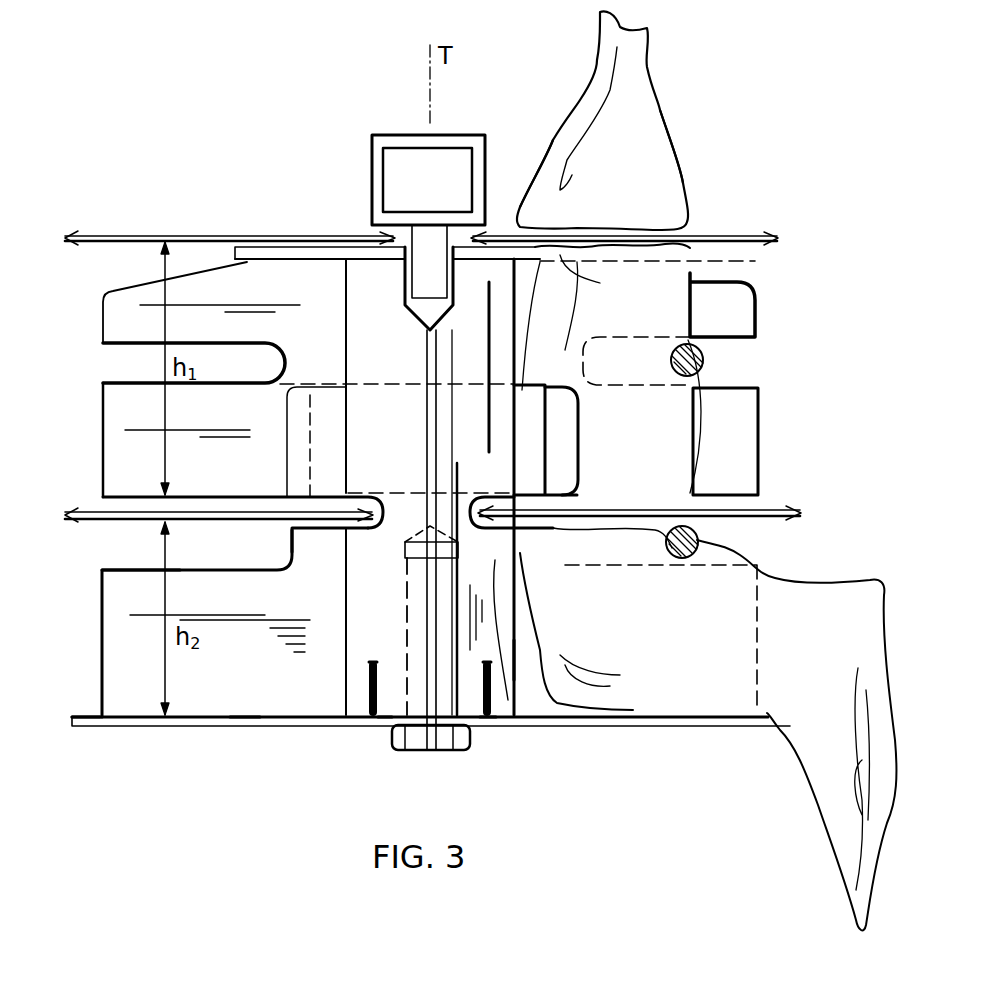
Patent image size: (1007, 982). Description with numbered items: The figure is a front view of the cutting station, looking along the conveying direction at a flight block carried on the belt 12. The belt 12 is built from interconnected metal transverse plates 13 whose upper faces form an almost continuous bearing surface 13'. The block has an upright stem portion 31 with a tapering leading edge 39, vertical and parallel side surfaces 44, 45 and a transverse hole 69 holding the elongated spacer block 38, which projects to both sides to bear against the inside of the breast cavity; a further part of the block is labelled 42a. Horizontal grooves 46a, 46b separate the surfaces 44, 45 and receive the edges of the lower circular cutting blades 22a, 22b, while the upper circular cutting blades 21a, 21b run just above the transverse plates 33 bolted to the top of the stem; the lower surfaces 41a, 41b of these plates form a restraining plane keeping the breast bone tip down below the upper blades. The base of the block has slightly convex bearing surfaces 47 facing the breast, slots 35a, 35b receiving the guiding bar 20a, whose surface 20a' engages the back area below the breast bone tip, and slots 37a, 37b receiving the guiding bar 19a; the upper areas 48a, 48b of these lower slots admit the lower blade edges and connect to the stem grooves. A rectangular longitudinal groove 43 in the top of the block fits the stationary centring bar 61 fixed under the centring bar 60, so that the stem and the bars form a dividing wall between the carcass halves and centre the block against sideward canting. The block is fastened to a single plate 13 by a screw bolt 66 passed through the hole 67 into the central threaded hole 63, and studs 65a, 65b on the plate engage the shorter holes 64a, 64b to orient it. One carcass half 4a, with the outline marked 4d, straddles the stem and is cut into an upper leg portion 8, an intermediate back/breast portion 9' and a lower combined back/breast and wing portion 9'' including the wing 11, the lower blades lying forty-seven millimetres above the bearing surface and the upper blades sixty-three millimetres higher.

The carcass half 4a is at (550, 135).
The grain body outline 4d is at (649, 125).
The leg portion 8 is at (624, 172).
The intermediate back/breast portion 9' is at (611, 368).
The combined back/breast and wing portion 9'' is at (638, 620).
The wing portion 11 is at (826, 679).
The belt 12 is at (243, 727).
The transverse plate 13 is at (429, 751).
The bearing surface 13' is at (75, 690).
The guiding bar 19a is at (668, 556).
The guiding bar 20a is at (744, 349).
The confining surface 20a' is at (638, 341).
The circular cutting blade 21a is at (733, 234).
The circular cutting blade 21b is at (155, 234).
The circular cutting blade 22a is at (782, 506).
The circular cutting blade 22b is at (75, 510).
The stem portion 31 is at (394, 445).
The transverse plate 33 is at (313, 250).
The slot 35a is at (730, 362).
The slot 35b is at (143, 363).
The slot 37a is at (720, 523).
The slot 37b is at (143, 537).
The spacer block 38 is at (560, 447).
The tapering leading edge 39 is at (392, 640).
The lower surface 41a is at (730, 262).
The lower surface 41b is at (247, 263).
The right block 42a is at (600, 423).
The longitudinal groove 43 is at (410, 302).
The vertical side surface 44 is at (346, 337).
The vertical side surface 45 is at (346, 600).
The groove 46a is at (513, 662).
The groove 46b is at (365, 532).
The bearing surface 47 is at (258, 617).
The upper slot area 48a is at (530, 702).
The upper slot area 48b is at (305, 522).
The centring bar 60 is at (405, 134).
The centring bar 61 is at (422, 243).
The central threaded hole 63 is at (388, 700).
The hole 64a is at (492, 716).
The hole 64b is at (372, 716).
The stud 65a is at (487, 720).
The stud 65b is at (382, 720).
The screw bolt 66 is at (428, 742).
The hole 67 is at (457, 735).
The transverse hole 69 is at (345, 393).